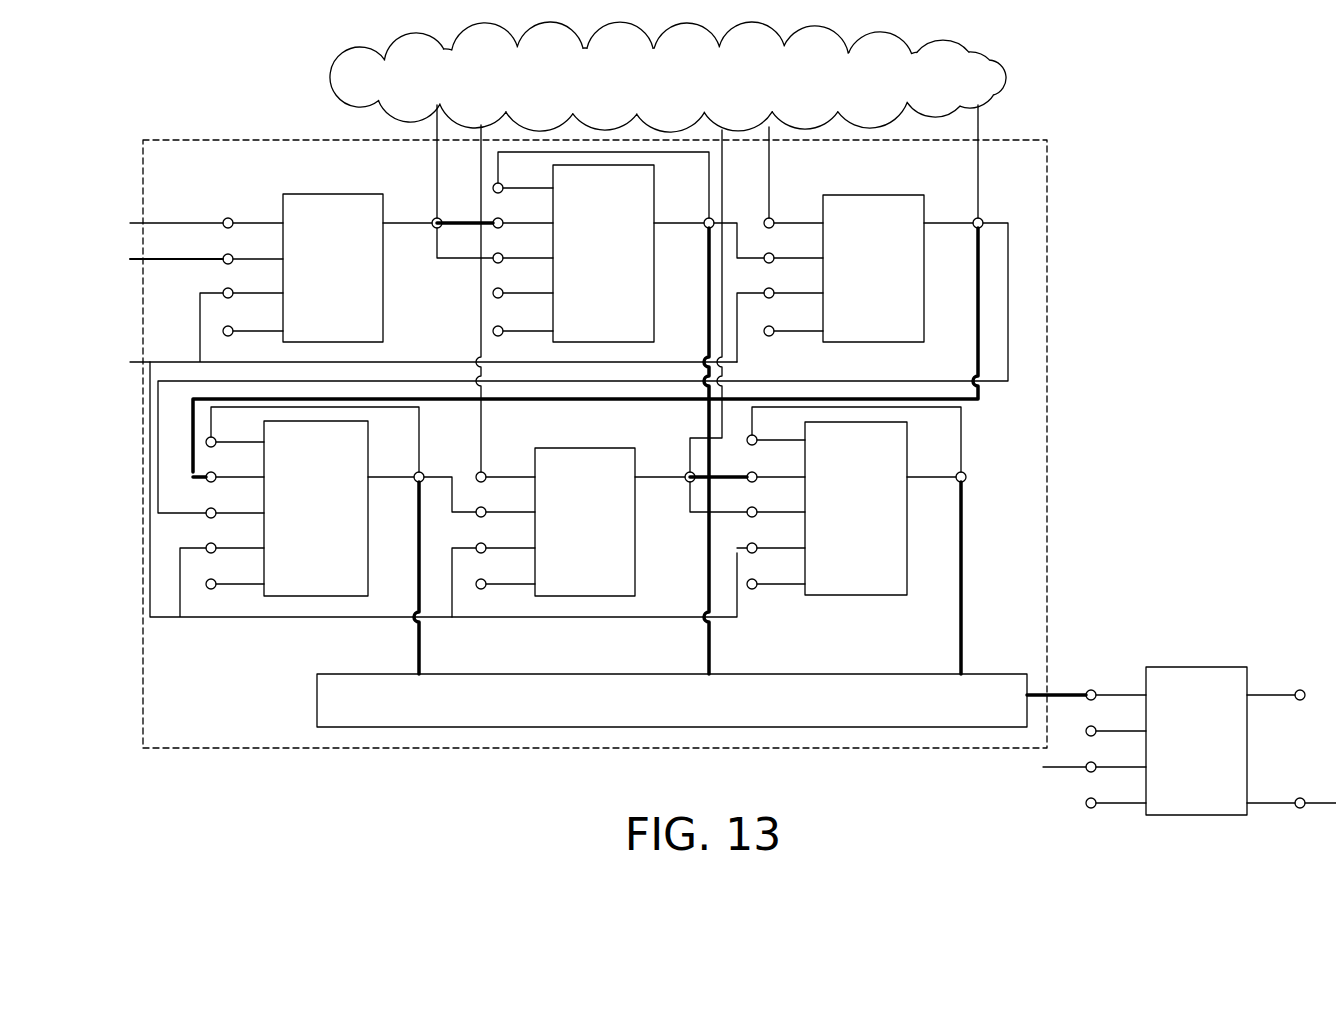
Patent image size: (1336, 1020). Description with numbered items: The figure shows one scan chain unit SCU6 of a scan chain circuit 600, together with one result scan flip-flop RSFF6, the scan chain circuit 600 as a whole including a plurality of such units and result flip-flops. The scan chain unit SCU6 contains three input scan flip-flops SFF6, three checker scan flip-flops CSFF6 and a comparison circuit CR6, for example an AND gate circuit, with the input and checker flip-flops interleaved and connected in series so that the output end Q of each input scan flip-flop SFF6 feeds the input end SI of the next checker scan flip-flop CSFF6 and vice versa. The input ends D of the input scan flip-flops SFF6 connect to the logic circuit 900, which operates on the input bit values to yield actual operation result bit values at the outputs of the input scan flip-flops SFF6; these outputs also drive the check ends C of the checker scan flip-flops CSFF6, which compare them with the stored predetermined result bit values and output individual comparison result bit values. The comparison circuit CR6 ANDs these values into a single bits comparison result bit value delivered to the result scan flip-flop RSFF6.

The logic circuit 900 is at (753, 88).
The input scan flip-flop SFF6 is at (310, 294).
The checker scan flip-flop CSFF6 is at (635, 295).
The comparison circuit CR6 is at (800, 711).
The scan chain unit SCU6 is at (1047, 523).
The result scan flip-flop RSFF6 is at (1165, 667).
The scan chain circuit 600 is at (703, 477).